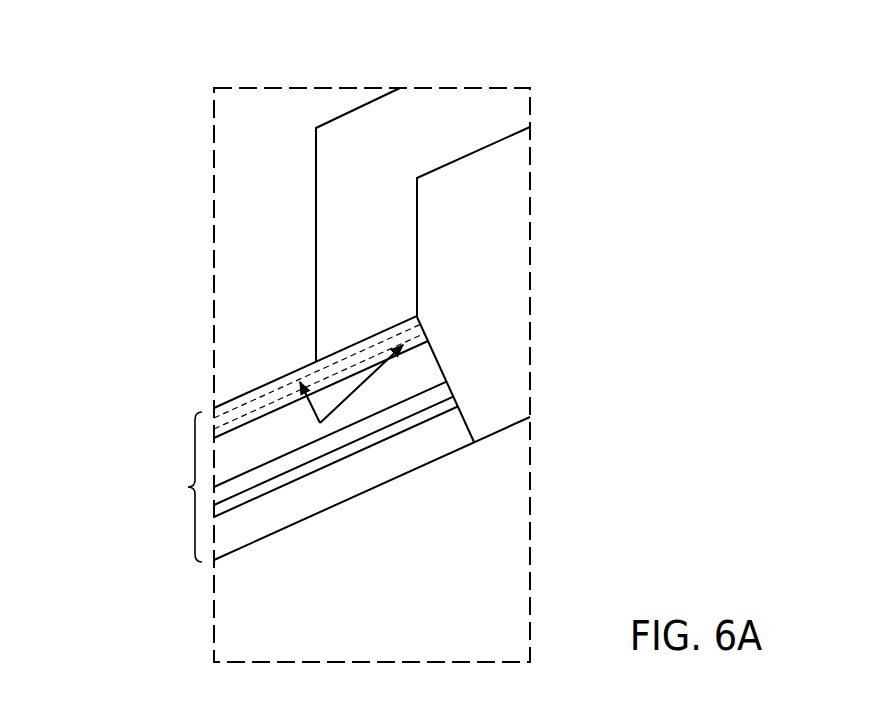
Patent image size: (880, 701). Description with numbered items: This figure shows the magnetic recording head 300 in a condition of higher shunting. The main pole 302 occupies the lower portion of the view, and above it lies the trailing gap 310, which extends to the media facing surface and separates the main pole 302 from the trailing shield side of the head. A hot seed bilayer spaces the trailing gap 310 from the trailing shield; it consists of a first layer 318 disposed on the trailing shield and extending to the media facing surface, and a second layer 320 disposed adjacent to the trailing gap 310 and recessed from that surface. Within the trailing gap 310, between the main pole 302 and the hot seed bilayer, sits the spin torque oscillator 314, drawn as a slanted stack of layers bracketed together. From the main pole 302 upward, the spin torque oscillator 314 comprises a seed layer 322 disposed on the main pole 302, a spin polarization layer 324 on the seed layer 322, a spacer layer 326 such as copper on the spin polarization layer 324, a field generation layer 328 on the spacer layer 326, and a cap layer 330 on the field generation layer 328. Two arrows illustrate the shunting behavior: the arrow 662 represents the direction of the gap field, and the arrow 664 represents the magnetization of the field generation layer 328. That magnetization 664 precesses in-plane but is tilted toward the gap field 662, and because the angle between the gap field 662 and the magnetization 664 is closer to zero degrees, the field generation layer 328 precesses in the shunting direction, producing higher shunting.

The magnetic recording head 300 is at (156, 72).
The main pole 302 is at (335, 615).
The trailing gap 310 is at (458, 229).
The spin torque oscillator 314 is at (309, 439).
The first layer 318 is at (241, 138).
The second layer 320 is at (400, 138).
The seed layer 322 is at (427, 450).
The spin polarization layer 324 is at (450, 399).
The spacer layer 326 is at (445, 390).
The field generation layer 328 is at (425, 358).
The cap layer 330 is at (420, 321).
The gap field arrow 662 is at (313, 408).
The FGL magnetization arrow 664 is at (371, 374).